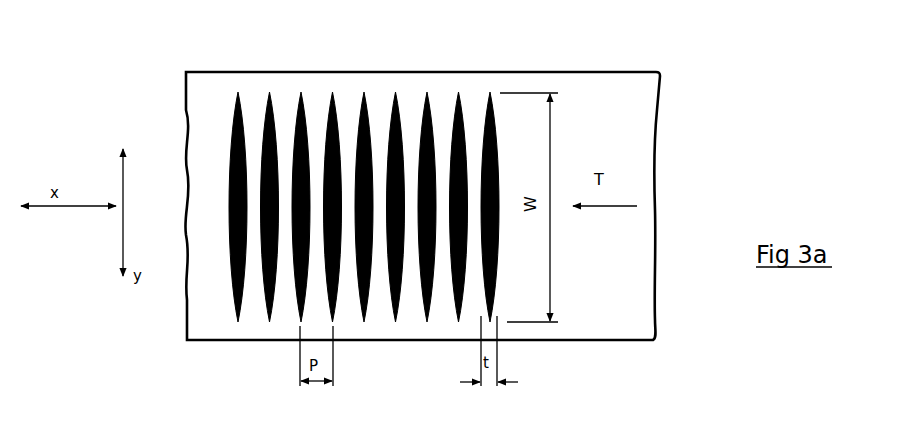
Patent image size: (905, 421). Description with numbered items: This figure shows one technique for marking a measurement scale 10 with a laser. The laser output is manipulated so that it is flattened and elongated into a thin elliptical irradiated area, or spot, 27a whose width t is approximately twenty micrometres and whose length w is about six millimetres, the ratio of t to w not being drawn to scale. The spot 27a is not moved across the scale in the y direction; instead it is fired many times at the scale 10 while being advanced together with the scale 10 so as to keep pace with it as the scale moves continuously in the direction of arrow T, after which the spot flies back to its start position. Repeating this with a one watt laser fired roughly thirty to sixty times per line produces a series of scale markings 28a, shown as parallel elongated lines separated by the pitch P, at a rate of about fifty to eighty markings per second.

The scale 10 is at (617, 97).
The elliptical irradiated area 27a is at (487, 105).
The scale markings 28a is at (221, 296).